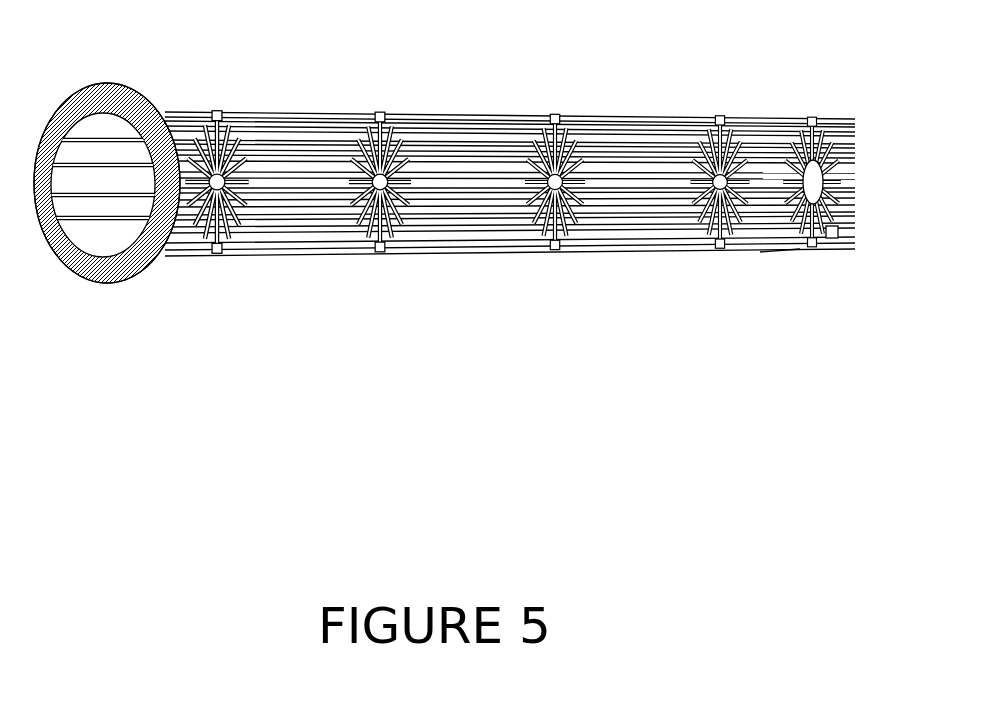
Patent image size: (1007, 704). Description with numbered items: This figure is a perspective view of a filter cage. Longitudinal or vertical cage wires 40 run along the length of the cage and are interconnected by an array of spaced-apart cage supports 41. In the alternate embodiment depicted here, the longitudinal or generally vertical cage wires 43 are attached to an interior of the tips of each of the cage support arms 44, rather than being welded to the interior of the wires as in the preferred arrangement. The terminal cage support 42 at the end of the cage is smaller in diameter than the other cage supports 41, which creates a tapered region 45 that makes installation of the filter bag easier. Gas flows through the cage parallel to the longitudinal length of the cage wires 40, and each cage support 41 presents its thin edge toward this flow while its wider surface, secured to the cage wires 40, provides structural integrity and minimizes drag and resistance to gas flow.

The cage wires 40 is at (263, 113).
The cage supports 41 is at (387, 113).
The terminal cage support 42 is at (830, 247).
The longitudinal cage wires 43 is at (312, 257).
The cage support arms 44 is at (833, 233).
The tapered region 45 is at (768, 275).